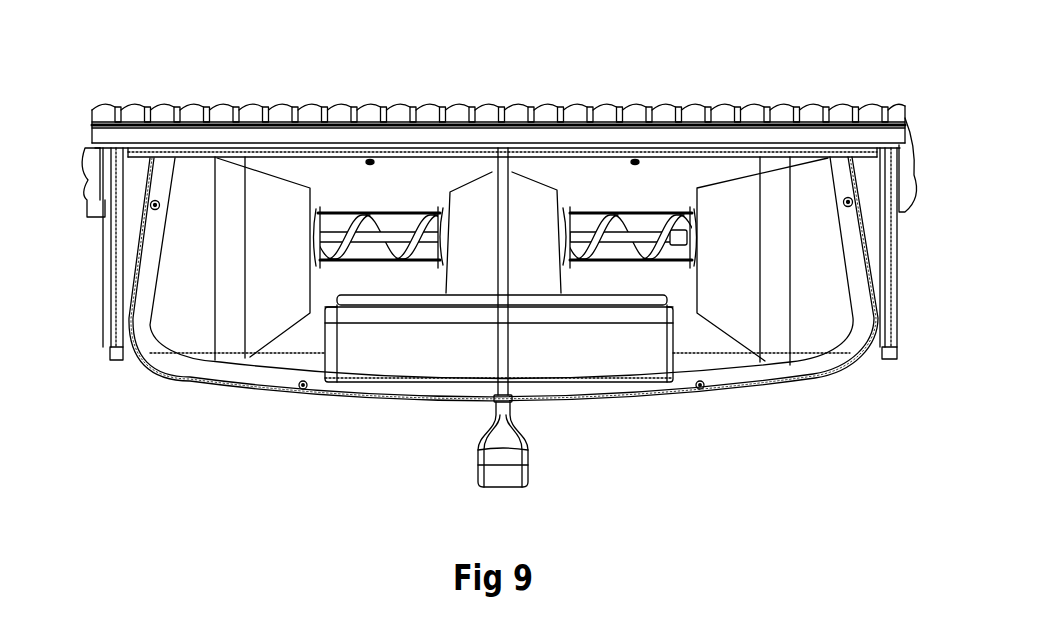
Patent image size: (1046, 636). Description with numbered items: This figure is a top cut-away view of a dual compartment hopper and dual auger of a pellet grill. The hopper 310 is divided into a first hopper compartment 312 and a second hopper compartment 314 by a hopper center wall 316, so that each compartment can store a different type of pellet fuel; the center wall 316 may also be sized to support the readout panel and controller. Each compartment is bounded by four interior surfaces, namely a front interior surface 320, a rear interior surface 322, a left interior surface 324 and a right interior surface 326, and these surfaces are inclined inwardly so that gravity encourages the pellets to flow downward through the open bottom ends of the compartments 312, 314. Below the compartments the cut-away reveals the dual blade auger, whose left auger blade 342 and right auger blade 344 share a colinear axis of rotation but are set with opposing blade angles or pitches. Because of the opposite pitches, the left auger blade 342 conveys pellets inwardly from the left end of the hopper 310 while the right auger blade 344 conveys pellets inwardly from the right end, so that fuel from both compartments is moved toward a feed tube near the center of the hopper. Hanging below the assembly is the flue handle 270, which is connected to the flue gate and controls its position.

The flue handle 270 is at (513, 478).
The hopper 310 is at (752, 393).
The first hopper compartment 312 is at (348, 208).
The second hopper compartment 314 is at (623, 185).
The hopper center wall 316 is at (502, 183).
The front interior surface 320 is at (308, 340).
The rear interior surface 322 is at (298, 178).
The left interior surface 324 is at (140, 363).
The right interior surface 326 is at (482, 215).
The left auger blade 342 is at (338, 252).
The right auger blade 344 is at (650, 252).